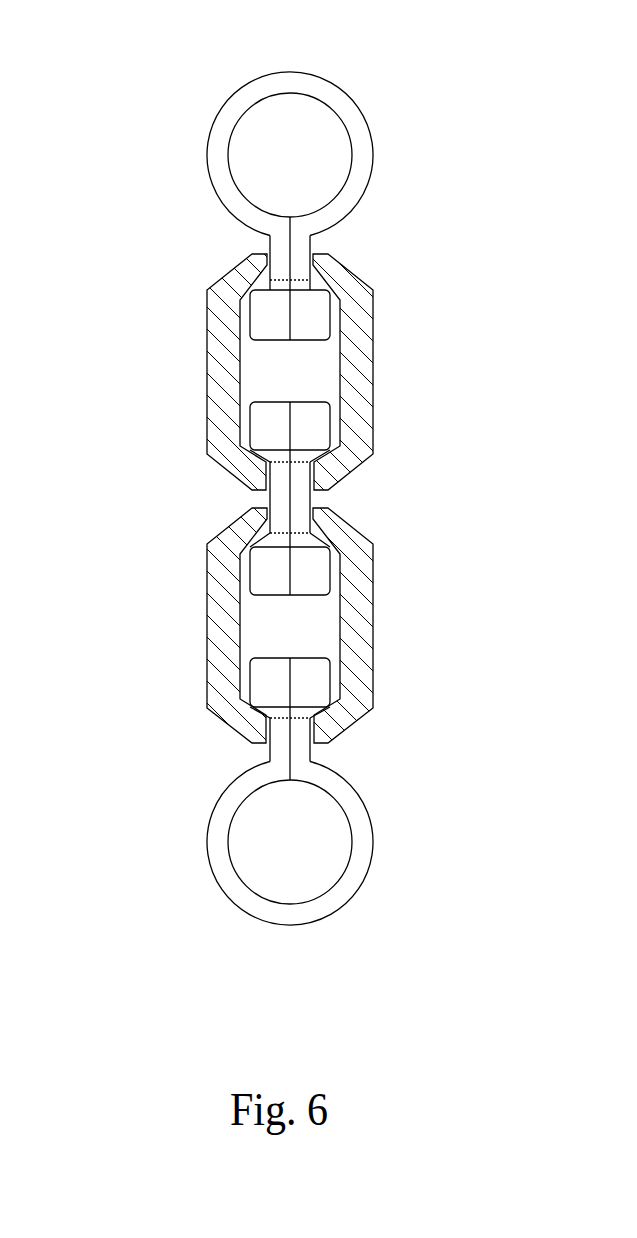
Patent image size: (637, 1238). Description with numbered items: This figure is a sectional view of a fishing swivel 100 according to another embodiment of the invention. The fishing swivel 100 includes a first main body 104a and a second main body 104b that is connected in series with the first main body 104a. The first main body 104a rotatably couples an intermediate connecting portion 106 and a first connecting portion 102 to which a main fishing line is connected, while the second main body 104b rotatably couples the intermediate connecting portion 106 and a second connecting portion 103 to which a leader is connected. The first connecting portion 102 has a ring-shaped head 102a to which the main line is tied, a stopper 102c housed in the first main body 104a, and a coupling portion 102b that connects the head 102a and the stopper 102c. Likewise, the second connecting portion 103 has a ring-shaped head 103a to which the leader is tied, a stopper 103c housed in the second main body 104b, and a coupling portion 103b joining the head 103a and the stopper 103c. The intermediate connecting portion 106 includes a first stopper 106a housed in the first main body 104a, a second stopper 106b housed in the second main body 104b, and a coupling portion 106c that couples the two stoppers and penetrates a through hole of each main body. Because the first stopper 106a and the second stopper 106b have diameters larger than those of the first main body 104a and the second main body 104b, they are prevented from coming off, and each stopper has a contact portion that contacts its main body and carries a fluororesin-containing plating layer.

The fishing swivel 100 is at (162, 104).
The first connecting portion 102 is at (365, 153).
The ring-shaped head 102a is at (362, 107).
The coupling portion 102b is at (305, 243).
The stopper 102c is at (320, 312).
The second connecting portion 103 is at (363, 852).
The ring-shaped head 103a is at (363, 817).
The coupling portion 103b is at (302, 750).
The stopper 103c is at (320, 680).
The first main body 104a is at (357, 362).
The second main body 104b is at (357, 623).
The intermediate connecting portion 106 is at (302, 500).
The first stopper 106a is at (320, 423).
The second stopper 106b is at (320, 573).
The coupling portion 106c is at (273, 502).